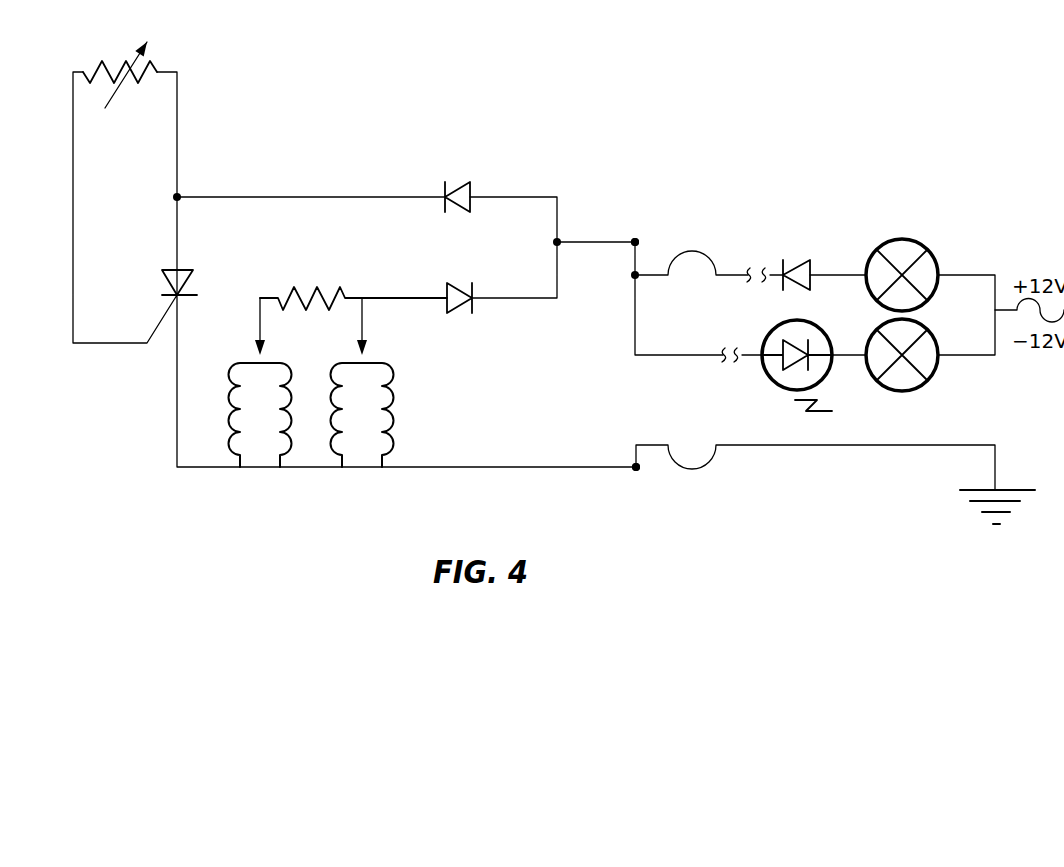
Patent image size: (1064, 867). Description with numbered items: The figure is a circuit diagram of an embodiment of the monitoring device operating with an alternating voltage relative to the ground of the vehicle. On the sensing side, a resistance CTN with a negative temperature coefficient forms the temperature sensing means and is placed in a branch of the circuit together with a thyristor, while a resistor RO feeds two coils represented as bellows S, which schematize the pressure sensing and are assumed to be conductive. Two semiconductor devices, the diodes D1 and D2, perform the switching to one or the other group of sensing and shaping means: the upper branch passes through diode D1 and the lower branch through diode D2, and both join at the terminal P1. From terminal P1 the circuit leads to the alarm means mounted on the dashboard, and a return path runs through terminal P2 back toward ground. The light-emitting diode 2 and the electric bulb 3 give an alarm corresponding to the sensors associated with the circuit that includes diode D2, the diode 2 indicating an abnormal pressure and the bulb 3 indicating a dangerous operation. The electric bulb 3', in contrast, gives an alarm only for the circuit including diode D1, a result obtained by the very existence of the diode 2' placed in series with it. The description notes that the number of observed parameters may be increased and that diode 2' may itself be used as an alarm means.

The resistance with negative temperature coefficient CTN is at (103, 68).
The resistor RO is at (306, 290).
The bellows S is at (337, 413).
The diode D1 is at (472, 190).
The diode D2 is at (472, 292).
The terminal P1 is at (633, 238).
The terminal P2 is at (638, 472).
The diode 2' is at (798, 253).
The light-emitting diode 2 is at (787, 365).
The electric bulb 3' is at (909, 263).
The electric bulb 3 is at (907, 361).